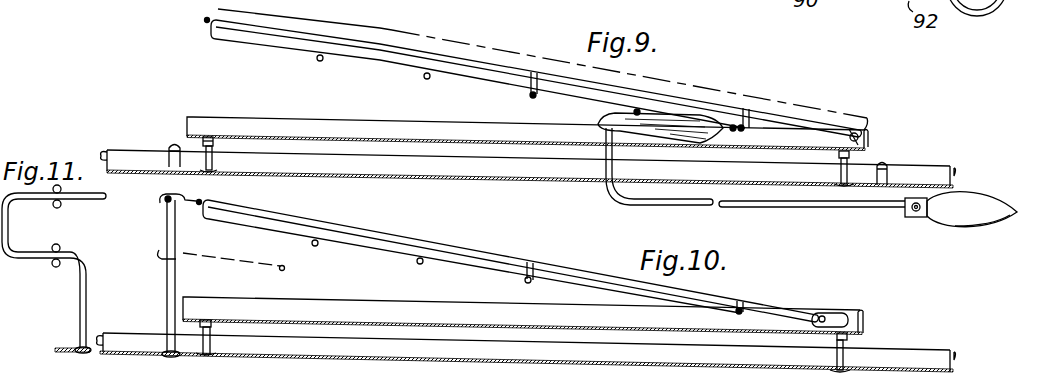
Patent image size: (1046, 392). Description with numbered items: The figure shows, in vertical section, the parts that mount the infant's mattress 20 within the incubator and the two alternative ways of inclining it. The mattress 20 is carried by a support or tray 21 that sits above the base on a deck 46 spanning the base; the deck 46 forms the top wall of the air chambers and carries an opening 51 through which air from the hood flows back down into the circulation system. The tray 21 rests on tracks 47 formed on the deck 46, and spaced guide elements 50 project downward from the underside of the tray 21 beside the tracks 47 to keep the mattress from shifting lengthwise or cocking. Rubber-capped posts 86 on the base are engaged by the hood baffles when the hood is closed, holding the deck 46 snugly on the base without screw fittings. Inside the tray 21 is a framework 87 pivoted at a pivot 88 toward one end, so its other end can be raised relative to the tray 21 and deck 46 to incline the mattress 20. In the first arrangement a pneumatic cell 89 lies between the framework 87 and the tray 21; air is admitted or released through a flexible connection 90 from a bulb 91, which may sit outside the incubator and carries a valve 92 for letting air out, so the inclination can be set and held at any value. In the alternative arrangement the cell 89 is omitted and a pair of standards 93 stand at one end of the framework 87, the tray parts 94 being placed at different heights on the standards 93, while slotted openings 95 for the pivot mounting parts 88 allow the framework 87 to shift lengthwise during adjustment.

In FIG. 9, the mattress 20 is at (375, 27).
In FIG. 9, the tray 21 is at (250, 135).
In FIG. 10, the tray 21 is at (300, 318).
In FIG. 9, the deck 46 is at (467, 175).
In FIG. 10, the deck 46 is at (487, 364).
In FIG. 9, the tracks 47 is at (217, 158).
In FIG. 10, the tracks 47 is at (215, 343).
In FIG. 9, the guide elements 50 is at (203, 139).
In FIG. 10, the guide elements 50 is at (200, 324).
In FIG. 9, the opening 51 is at (898, 182).
In FIG. 10, the opening 51 is at (897, 364).
In FIG. 9, the posts 86 is at (171, 147).
In FIG. 9, the framework 87 is at (364, 58).
In FIG. 10, the framework 87 is at (525, 279).
In FIG. 9, the pivot 88 is at (868, 126).
In FIG. 10, the pivot 88 is at (833, 313).
In FIG. 9, the pneumatic cell 89 is at (613, 116).
In FIG. 9, the flexible connection 90 is at (778, 207).
In FIG. 9, the bulb 91 is at (990, 199).
In FIG. 9, the valve 92 is at (916, 217).
In FIG. 10, the standards 93 is at (167, 279).
In FIG. 11, the standards 93 is at (80, 297).
In FIG. 10, the tray parts 94 is at (162, 199).
In FIG. 11, the tray parts 94 is at (62, 189).
In FIG. 10, the slotted openings 95 is at (845, 318).